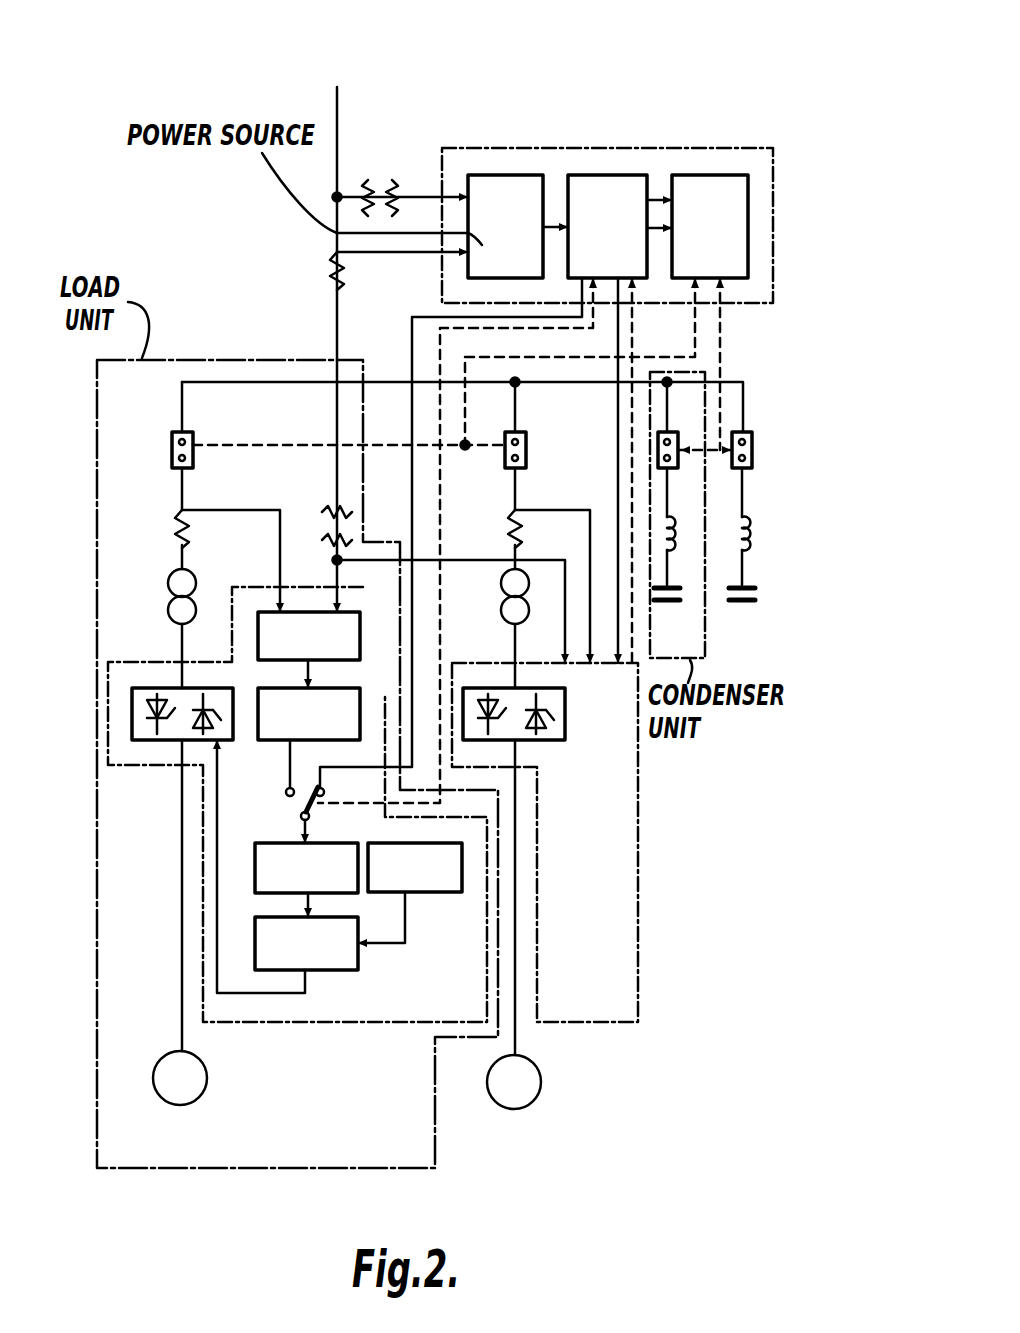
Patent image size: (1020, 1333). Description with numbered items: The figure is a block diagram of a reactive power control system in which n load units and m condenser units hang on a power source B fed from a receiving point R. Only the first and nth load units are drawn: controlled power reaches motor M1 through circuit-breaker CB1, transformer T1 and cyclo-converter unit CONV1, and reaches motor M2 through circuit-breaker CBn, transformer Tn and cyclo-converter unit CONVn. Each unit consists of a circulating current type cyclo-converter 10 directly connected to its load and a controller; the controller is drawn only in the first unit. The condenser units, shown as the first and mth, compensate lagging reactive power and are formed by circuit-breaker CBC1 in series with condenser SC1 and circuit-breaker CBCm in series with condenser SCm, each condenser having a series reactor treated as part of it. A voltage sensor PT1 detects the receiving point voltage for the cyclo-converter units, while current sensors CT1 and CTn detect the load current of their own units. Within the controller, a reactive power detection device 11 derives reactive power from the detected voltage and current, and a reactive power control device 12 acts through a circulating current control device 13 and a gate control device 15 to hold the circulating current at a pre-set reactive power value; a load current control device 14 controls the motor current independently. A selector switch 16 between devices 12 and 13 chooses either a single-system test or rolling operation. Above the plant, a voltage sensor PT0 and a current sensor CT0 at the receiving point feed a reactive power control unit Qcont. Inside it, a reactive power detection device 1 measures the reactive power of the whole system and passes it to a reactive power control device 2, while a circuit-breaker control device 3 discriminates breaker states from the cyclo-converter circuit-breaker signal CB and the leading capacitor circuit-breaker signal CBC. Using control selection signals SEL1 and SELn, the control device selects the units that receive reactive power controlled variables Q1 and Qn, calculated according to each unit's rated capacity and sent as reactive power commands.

The reactive power detection device 1 is at (258, 212).
The reactive power control device 2 is at (223, 50).
The circuit-breaker control device 3 is at (467, 38).
The cyclo-converter 10 is at (163, 688).
The reactive power detection device 11 is at (276, 612).
The reactive power control device 12 is at (262, 743).
The circulating current control device 13 is at (255, 855).
The load current control device 14 is at (412, 892).
The gate control device 15 is at (360, 960).
The selector switch 16 is at (320, 805).
The power source B is at (337, 320).
The receiving point R is at (338, 375).
The voltage sensor PT0 is at (380, 178).
The current sensor CT0 is at (332, 256).
The cyclo-converter circuit-breaker signal CB is at (695, 338).
The leading capacitor circuit-breaker signal CBC is at (720, 355).
The circuit-breaker CB1 is at (196, 437).
The circuit-breaker CBn is at (527, 452).
The circuit-breaker CBC1 is at (680, 437).
The circuit-breaker CBCm is at (752, 455).
The condenser SC1 is at (667, 604).
The condenser SCm is at (742, 604).
The reactive power controlled variable Q1 is at (412, 414).
The reactive power controlled variable Qn is at (618, 401).
The control selection signal SEL1 is at (440, 428).
The control selection signal SELn is at (632, 442).
The current sensor CT1 is at (182, 516).
The current sensor CTn is at (513, 520).
The voltage sensor PT1 is at (333, 510).
The transformer T1 is at (168, 585).
The transformer Tn is at (501, 584).
The motor M1 is at (168, 1102).
The motor M2 is at (532, 1105).
The cyclo-converter unit CONV1 is at (326, 1022).
The cyclo-converter unit CONVn is at (638, 978).
The reactive power control unit Qcont is at (640, 150).